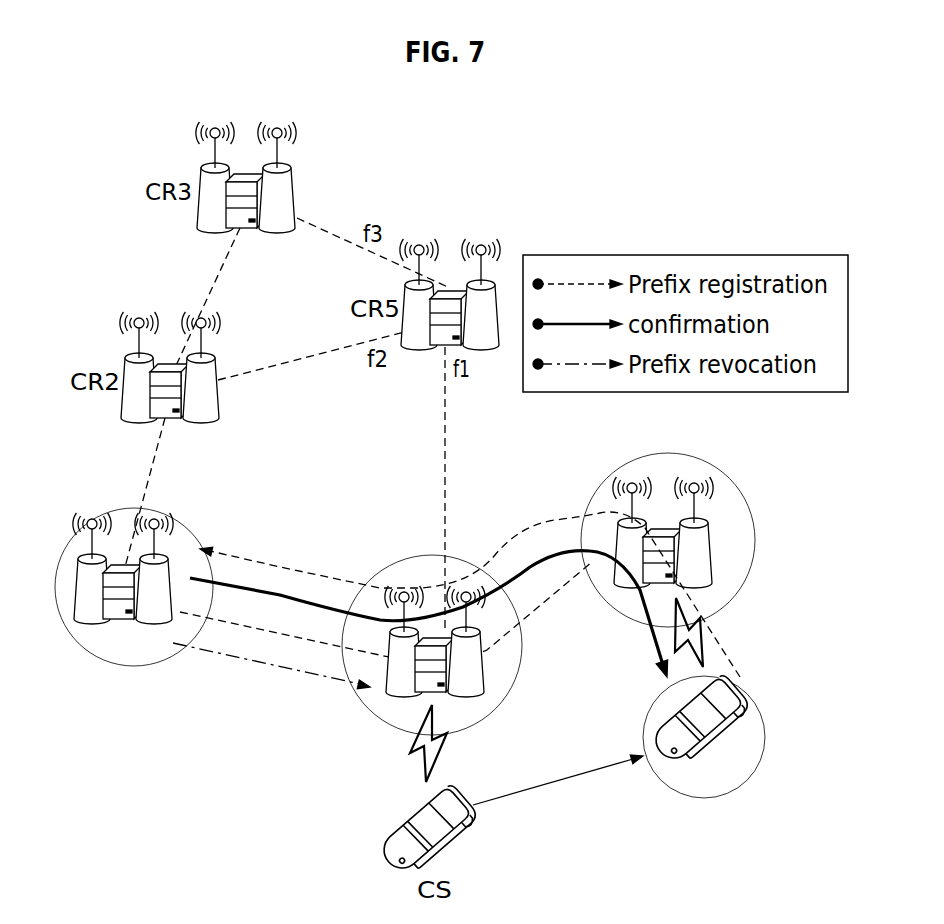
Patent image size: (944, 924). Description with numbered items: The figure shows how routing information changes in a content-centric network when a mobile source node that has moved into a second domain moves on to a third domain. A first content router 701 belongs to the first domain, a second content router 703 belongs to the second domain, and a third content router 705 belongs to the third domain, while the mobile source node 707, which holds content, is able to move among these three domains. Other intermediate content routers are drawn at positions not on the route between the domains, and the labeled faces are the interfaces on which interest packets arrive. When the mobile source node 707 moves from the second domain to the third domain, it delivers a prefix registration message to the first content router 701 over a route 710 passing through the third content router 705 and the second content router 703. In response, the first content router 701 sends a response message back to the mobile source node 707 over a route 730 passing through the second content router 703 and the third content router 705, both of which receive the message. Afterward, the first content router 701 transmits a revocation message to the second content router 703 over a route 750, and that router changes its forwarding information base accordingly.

The content router CR1 701 is at (190, 532).
The content router CR4 703 is at (363, 708).
The content router CR6 705 is at (667, 453).
The mobile source node CS 707 is at (703, 800).
The route of prefix registration message 710 is at (282, 567).
The route of response message 730 is at (528, 577).
The route of revocation message 750 is at (248, 662).